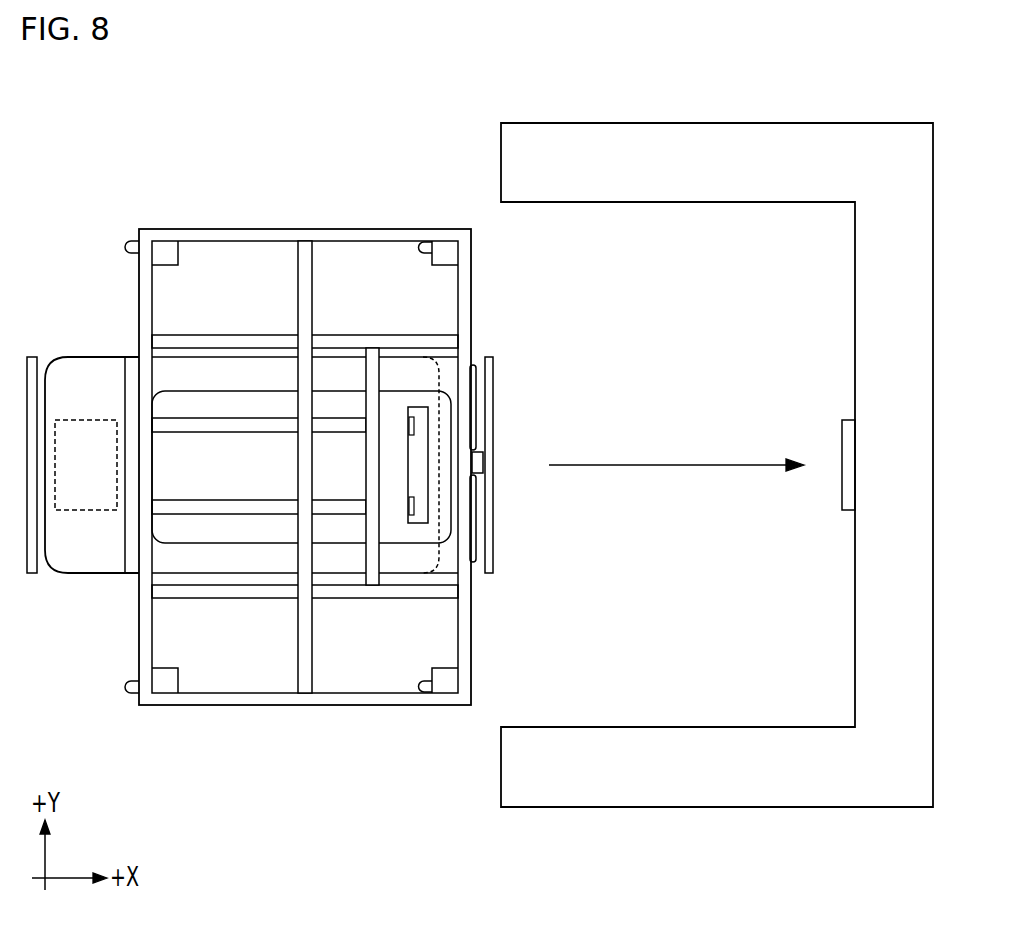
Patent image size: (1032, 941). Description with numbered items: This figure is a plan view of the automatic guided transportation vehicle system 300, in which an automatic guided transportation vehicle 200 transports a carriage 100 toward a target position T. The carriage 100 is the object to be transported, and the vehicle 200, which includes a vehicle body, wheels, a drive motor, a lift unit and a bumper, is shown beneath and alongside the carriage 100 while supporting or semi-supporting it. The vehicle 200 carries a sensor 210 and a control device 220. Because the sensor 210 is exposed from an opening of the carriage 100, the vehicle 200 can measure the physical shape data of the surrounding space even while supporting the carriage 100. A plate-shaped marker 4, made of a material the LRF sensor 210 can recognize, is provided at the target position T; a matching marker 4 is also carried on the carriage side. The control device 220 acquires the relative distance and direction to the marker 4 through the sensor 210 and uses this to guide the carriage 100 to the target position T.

The automatic guided transportation vehicle system 300 is at (301, 401).
The carriage 100 is at (340, 213).
The automatic guided transportation vehicle 200 is at (79, 431).
The sensor 210 is at (480, 465).
The control device 220 is at (80, 510).
The marker 4 is at (418, 460).
The target position T is at (763, 224).